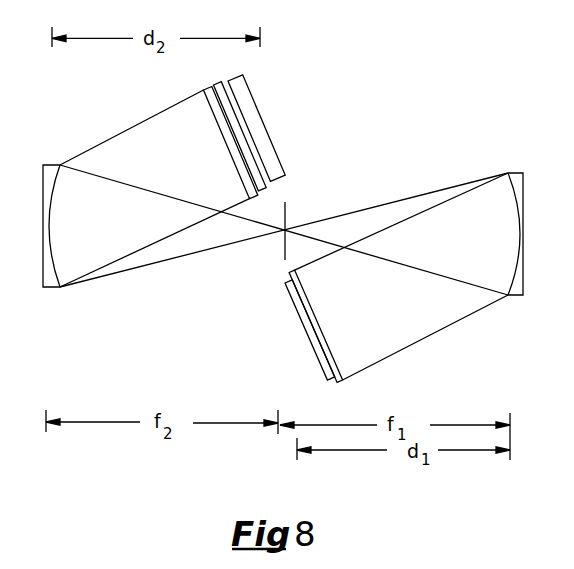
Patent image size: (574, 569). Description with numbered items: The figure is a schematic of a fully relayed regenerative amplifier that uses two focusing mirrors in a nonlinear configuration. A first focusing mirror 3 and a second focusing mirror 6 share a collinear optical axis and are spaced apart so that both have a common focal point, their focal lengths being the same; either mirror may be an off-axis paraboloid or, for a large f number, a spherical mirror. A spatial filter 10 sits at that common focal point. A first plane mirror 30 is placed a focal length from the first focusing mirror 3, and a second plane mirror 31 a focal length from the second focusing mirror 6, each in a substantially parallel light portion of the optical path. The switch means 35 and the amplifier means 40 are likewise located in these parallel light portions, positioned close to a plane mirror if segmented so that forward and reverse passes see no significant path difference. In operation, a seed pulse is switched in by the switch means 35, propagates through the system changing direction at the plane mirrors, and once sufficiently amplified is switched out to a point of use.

The first focusing mirror 3 is at (43, 192).
The second focusing mirror 6 is at (523, 205).
The spatial filter 10 is at (286, 205).
The first plane mirror 30 is at (257, 103).
The second plane mirror 31 is at (298, 317).
The switch means 35 is at (218, 83).
The amplifier means 40 is at (203, 91).